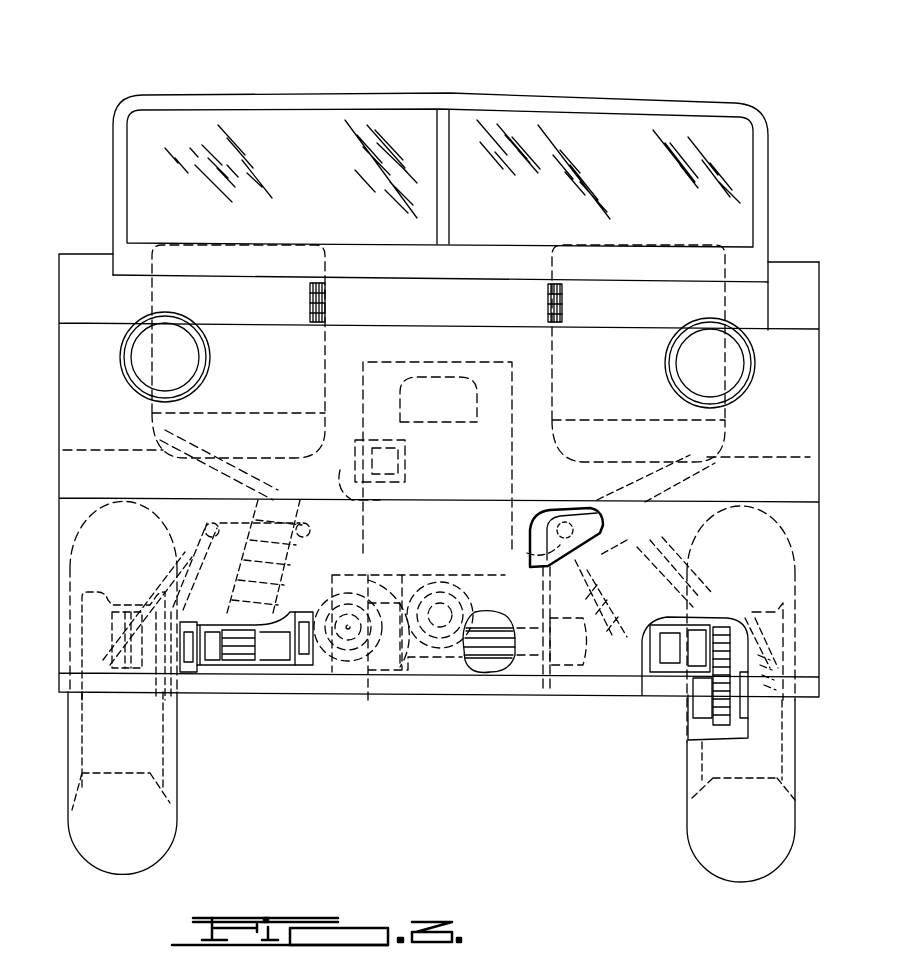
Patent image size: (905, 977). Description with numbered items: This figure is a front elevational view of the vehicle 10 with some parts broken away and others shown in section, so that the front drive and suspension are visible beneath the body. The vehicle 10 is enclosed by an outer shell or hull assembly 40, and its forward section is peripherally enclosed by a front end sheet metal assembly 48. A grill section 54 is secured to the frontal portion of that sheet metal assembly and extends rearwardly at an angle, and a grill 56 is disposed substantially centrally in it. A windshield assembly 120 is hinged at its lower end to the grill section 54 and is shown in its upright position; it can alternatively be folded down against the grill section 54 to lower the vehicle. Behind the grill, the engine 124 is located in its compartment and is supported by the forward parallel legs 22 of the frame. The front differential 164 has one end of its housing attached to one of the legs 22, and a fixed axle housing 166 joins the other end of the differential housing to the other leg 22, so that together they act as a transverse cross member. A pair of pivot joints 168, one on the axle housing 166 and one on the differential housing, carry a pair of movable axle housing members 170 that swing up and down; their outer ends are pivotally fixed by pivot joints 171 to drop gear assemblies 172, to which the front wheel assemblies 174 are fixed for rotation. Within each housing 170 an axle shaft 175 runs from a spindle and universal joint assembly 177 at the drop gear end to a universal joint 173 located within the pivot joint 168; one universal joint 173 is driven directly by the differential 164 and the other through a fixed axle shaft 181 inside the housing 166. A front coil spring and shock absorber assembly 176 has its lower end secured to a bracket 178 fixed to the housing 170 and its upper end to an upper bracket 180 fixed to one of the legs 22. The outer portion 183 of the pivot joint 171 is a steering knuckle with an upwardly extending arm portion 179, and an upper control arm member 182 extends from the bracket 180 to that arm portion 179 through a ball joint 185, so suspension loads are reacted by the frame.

The vehicle 10 is at (680, 71).
The outer shell or hull assembly 40 is at (58, 341).
The front end sheet metal assembly 48 is at (775, 333).
The windshield assembly 120 is at (418, 93).
The grill section 54 is at (266, 284).
The grill 56 is at (450, 293).
The engine 124 is at (485, 438).
The front differential 164 is at (350, 693).
The axle housing 166 is at (500, 615).
The pivot joints 168 is at (273, 620).
The movable axle housing members 170 is at (258, 660).
The pivot joints 171 is at (185, 660).
The drop gear assemblies 172 is at (713, 730).
The universal joint 173 is at (303, 667).
The front wheel assemblies 174 is at (688, 858).
The axle shaft 175 is at (243, 657).
The front coil spring and shock absorber assembly 176 is at (665, 490).
The spindle and universal joint assembly 177 is at (687, 637).
The bracket 178 is at (620, 595).
The arm portion 179 is at (697, 548).
The upper bracket 180 is at (553, 527).
The fixed axle shaft 181 is at (483, 643).
The upper control arm member 182 is at (637, 520).
The outer portion of the pivot joint 183 is at (670, 677).
The ball joint 185 is at (697, 530).
The parallel legs 22 is at (527, 553).